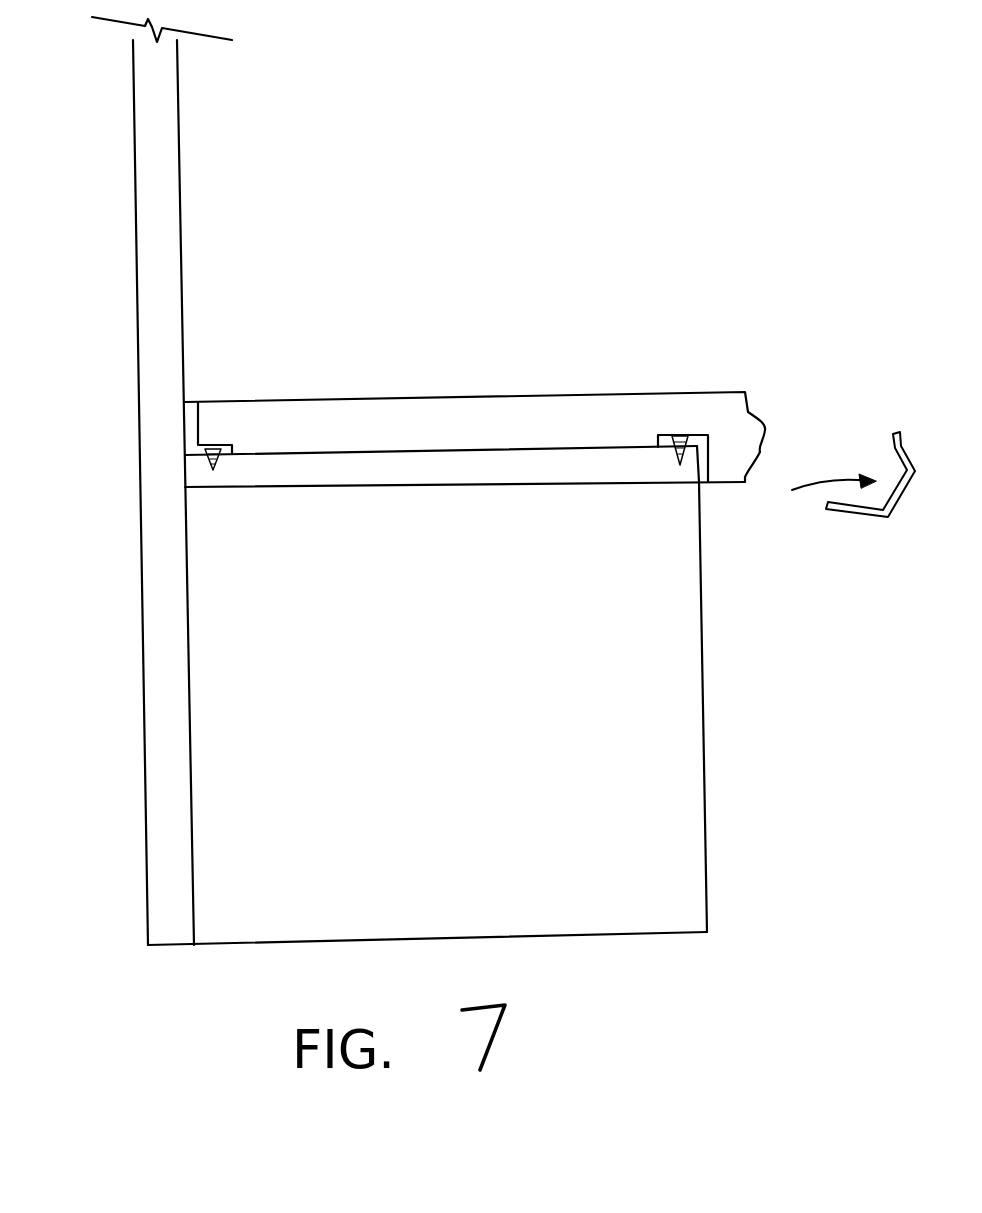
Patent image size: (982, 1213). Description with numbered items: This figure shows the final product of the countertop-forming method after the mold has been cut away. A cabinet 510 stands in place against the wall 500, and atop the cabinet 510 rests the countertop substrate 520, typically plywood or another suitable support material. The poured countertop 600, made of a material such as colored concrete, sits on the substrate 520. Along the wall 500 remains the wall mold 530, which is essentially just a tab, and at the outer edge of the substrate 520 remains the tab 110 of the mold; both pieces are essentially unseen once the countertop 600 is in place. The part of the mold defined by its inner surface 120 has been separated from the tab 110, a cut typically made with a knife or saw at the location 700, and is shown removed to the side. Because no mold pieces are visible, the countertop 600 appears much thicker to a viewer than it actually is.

The wall 500 is at (157, 553).
The cabinet 510 is at (665, 682).
The countertop substrate 520 is at (578, 472).
The wall mold 530 is at (191, 420).
The countertop 600 is at (428, 432).
The location 700 is at (705, 490).
The tab 110 is at (670, 440).
The inner surface 120 is at (898, 477).